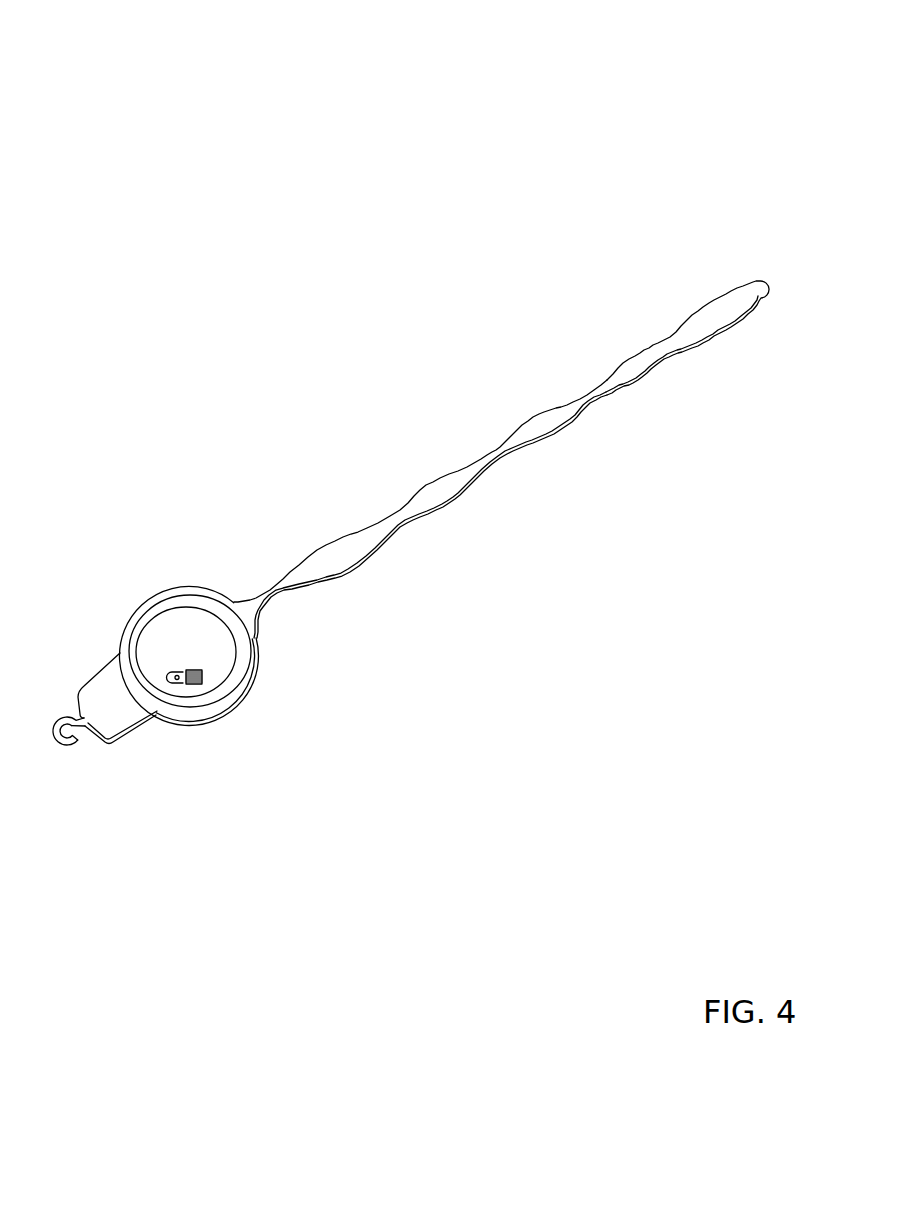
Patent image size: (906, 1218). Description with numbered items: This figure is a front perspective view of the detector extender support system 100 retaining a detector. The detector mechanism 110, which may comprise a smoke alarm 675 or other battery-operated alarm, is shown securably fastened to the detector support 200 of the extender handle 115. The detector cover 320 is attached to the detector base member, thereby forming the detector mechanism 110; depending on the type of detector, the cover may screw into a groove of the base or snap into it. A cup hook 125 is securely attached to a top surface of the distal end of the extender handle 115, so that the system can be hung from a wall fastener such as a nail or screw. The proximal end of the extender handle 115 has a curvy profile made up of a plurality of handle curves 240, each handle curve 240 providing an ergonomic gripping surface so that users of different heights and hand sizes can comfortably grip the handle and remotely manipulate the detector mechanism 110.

The detector extender support system 100 is at (587, 83).
The detector mechanism 110 is at (158, 637).
The extender handle 115 is at (542, 428).
The cup hook 125 is at (63, 717).
The detector support 200 is at (238, 695).
The handle curve 240 is at (630, 353).
The detector cover 320 is at (204, 640).
The smoke alarm 675 is at (187, 692).